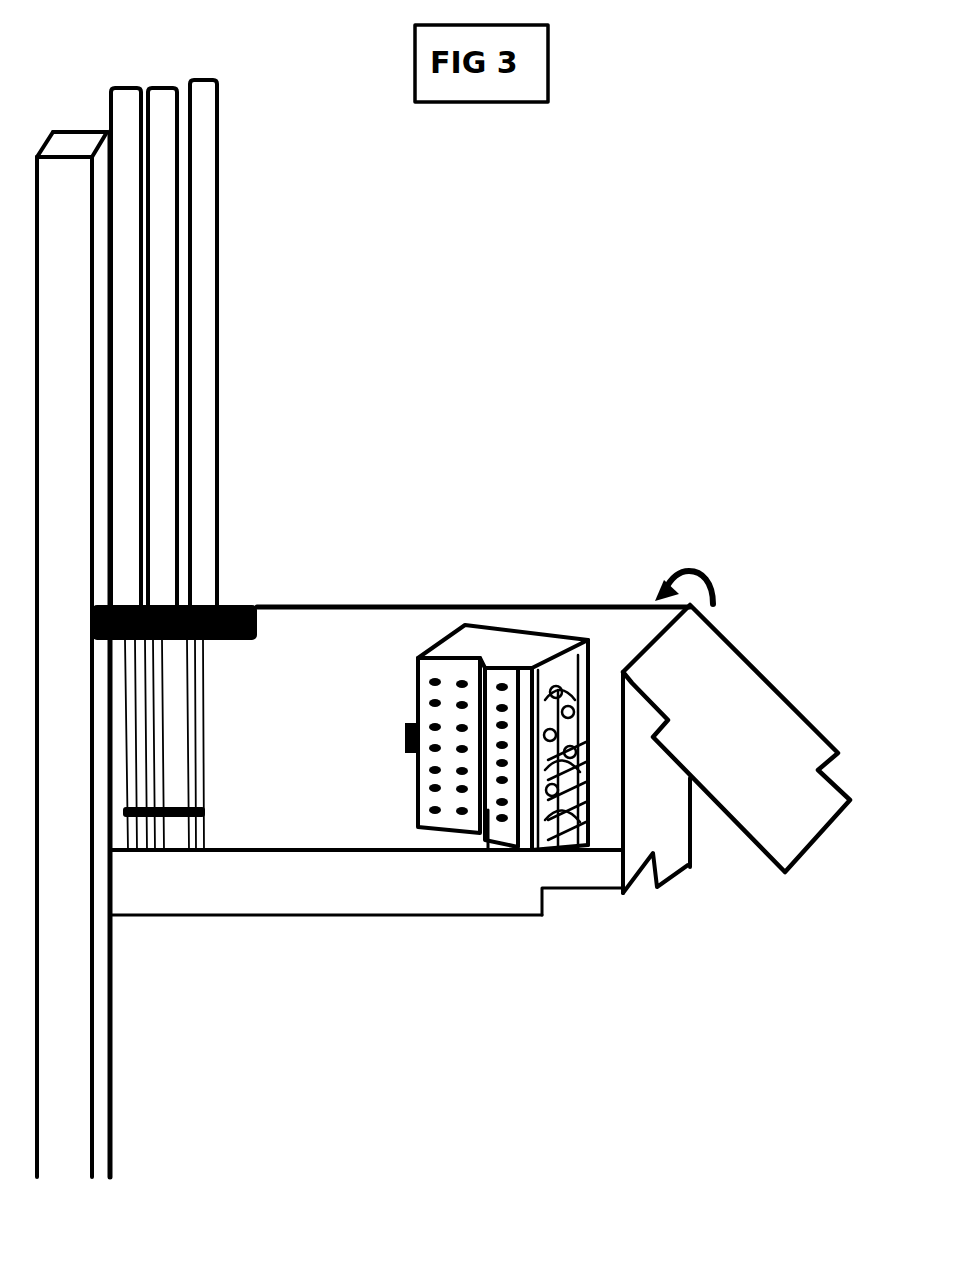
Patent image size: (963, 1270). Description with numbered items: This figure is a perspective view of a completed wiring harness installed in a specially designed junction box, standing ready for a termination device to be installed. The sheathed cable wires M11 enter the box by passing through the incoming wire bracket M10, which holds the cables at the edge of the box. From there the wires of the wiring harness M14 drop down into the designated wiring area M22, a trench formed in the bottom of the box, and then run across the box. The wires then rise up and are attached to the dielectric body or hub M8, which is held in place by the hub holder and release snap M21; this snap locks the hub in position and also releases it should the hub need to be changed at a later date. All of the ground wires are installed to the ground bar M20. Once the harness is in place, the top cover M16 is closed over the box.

The dielectric body or HUB M8 is at (488, 645).
The incoming wire bracket M10 is at (253, 603).
The sheathed cable wires M11 is at (217, 487).
The wiring harness M14 is at (148, 767).
The top cover M16 is at (748, 730).
The ground bar M20 is at (488, 850).
The HUB holder/release snap M21 is at (405, 738).
The designated wiring area M22 is at (672, 855).